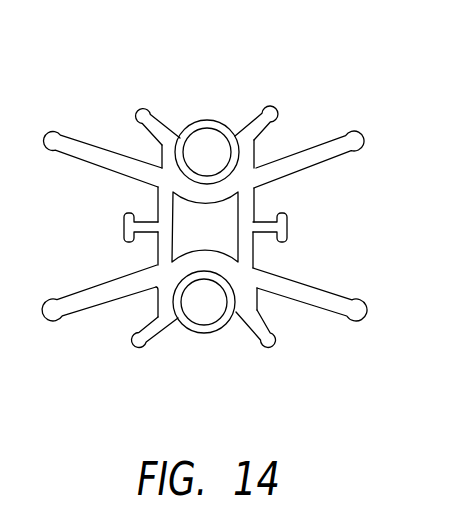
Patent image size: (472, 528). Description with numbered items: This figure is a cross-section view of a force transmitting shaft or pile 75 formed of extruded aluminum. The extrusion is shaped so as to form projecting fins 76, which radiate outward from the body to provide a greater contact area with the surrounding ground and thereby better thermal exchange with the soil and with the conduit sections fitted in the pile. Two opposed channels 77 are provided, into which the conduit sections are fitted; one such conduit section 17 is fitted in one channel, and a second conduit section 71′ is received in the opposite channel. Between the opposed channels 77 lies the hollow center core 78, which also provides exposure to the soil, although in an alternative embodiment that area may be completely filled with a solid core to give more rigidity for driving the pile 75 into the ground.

The pile 75 is at (350, 220).
The conduit section 17 is at (209, 120).
The tubular member 71′ is at (215, 334).
The projecting fins 76 is at (300, 160).
The opposed channels 77 is at (190, 157).
The hollow center core 78 is at (238, 224).